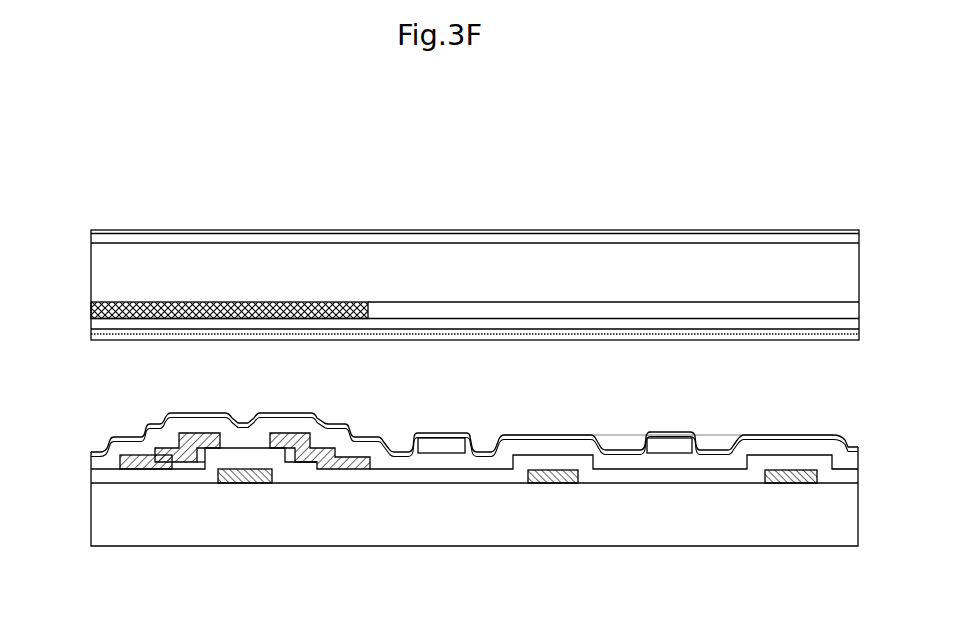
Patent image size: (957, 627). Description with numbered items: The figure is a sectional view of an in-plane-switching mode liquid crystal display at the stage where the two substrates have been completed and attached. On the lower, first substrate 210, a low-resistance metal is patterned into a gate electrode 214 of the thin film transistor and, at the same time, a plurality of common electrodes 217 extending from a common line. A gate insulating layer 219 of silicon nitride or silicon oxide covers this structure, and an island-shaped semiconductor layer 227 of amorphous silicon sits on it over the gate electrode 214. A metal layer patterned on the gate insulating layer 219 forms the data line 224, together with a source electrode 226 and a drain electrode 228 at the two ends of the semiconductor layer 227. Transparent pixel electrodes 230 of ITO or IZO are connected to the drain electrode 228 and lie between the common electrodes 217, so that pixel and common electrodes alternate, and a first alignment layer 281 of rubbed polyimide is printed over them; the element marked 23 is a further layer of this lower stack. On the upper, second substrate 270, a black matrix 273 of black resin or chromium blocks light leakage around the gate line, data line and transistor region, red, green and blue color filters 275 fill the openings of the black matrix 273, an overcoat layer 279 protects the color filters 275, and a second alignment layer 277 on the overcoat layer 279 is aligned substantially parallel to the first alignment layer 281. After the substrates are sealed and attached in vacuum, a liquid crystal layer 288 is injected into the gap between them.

The first substrate 210 is at (806, 522).
The gate electrode 214 is at (245, 484).
The common electrodes 217 is at (560, 472).
The gate insulating layer 219 is at (838, 437).
The data line 224 is at (140, 453).
The source electrode 226 is at (205, 433).
The semiconductor layer 227 is at (182, 472).
The drain electrode 228 is at (292, 433).
The pixel electrodes 230 is at (437, 450).
The electrode layer 23 is at (848, 463).
The second substrate 270 is at (802, 255).
The black matrix 273 is at (243, 302).
The color filters 275 is at (521, 310).
The second alignment layer 277 is at (95, 337).
The overcoat layer 279 is at (93, 325).
The first alignment layer 281 is at (368, 430).
The liquid crystal layer 288 is at (495, 400).